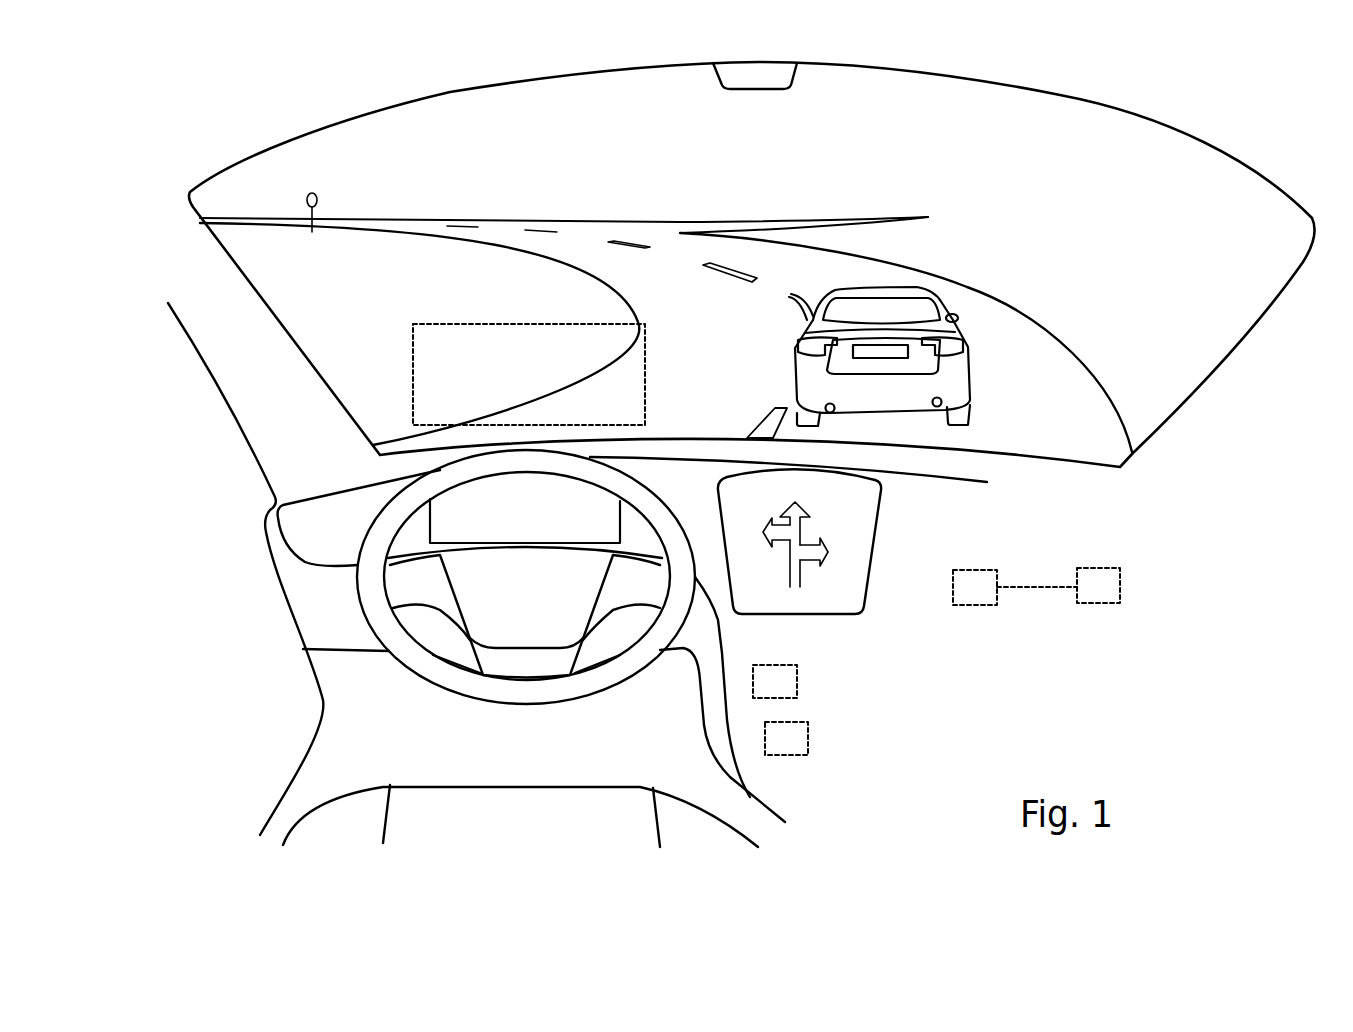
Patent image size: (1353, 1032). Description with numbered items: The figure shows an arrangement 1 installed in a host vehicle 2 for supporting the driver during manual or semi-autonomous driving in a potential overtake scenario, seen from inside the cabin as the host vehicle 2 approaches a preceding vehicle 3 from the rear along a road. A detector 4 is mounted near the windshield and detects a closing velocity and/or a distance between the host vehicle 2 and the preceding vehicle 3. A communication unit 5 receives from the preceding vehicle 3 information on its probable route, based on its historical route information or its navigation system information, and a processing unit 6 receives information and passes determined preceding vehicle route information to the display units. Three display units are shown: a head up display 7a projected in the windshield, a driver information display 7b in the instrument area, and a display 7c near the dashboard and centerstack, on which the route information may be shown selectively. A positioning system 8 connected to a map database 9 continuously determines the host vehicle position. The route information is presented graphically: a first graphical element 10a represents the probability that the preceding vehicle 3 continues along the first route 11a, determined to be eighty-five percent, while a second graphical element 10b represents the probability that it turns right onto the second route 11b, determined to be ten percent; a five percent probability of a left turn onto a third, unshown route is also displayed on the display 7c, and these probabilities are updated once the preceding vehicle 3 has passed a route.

The arrangement 1 is at (1082, 715).
The vehicle 2 is at (1225, 135).
The preceding vehicle 3 is at (972, 258).
The detector 4 is at (760, 93).
The communication unit 5 is at (803, 678).
The processing unit 6 is at (812, 735).
The head up display 7a is at (410, 383).
The driver information display 7b is at (483, 530).
The display 7c is at (830, 557).
The positioning system 8 is at (968, 565).
The map database 9 is at (1100, 562).
The first graphical element 10a is at (825, 492).
The second graphical element 10b is at (850, 537).
The first route 11a is at (383, 240).
The second route 11b is at (735, 212).